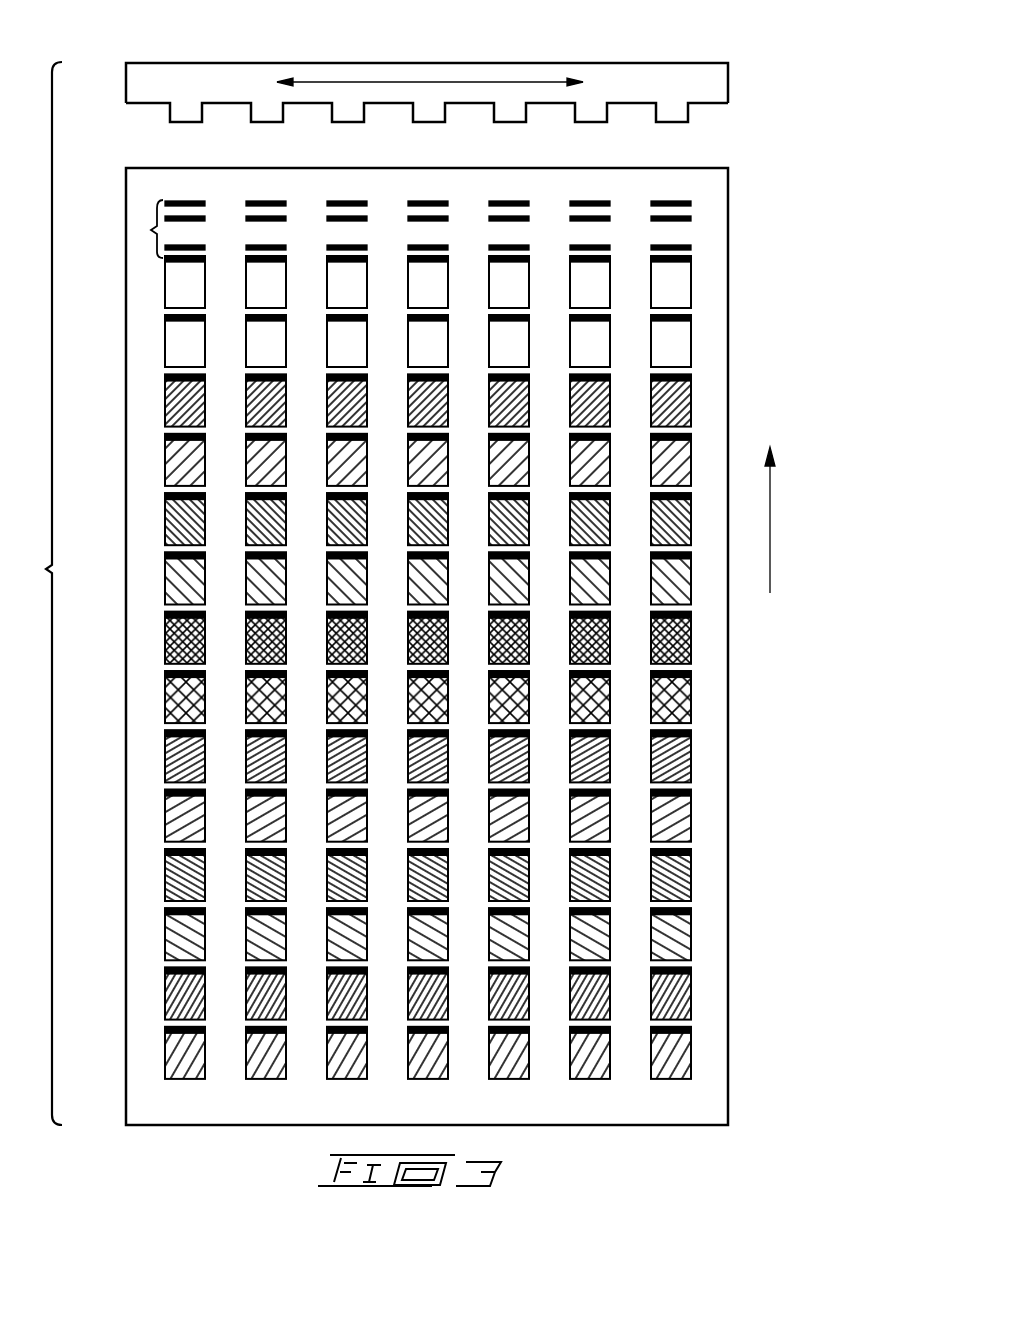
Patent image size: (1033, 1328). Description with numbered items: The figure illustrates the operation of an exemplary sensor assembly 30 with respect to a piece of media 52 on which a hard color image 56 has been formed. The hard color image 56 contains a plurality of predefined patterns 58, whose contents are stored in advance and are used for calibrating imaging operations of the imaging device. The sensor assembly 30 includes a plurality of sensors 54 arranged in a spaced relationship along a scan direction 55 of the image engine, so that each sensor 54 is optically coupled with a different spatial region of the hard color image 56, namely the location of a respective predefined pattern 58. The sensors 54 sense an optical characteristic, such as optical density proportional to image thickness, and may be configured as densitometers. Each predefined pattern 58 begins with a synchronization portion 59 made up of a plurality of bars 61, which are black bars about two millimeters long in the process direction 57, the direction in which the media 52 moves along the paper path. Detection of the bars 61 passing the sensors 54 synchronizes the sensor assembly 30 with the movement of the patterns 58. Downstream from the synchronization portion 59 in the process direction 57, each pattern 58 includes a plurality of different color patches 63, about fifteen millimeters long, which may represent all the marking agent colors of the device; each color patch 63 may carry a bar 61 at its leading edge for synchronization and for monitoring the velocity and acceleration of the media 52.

The sensor assembly 30 is at (730, 82).
The media 52 is at (730, 249).
The sensors 54 is at (165, 115).
The scan direction 55 is at (427, 82).
The hard color image 56 is at (696, 181).
The process direction 57 is at (770, 520).
The predefined patterns 58 is at (262, 192).
The synchronization portion 59 is at (149, 230).
The bars 61 is at (202, 219).
The color patches 63 is at (164, 345).